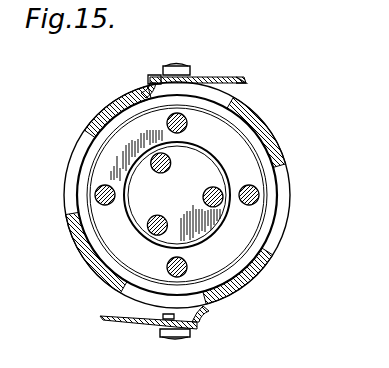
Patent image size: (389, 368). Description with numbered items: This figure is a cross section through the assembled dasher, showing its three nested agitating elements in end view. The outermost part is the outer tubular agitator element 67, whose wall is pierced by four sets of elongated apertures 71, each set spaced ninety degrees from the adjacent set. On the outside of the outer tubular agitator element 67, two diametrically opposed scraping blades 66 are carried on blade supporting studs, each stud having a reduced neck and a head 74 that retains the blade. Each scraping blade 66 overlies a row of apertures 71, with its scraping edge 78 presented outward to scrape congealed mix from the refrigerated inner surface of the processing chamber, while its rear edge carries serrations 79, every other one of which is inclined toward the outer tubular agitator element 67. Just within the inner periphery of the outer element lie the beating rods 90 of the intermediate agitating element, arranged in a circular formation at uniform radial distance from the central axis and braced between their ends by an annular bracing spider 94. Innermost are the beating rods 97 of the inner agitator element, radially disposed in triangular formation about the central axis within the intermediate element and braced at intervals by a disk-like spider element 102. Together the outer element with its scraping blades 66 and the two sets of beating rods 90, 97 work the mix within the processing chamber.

The scraping blade 66 is at (218, 77).
The outer tubular agitator element 67 is at (83, 264).
The elongated apertures 71 is at (76, 164).
The head 74 is at (181, 335).
The scraping edge 78 is at (243, 83).
The serrations 79 is at (157, 88).
The beating rods 90 is at (95, 197).
The annular bracing spider 94 is at (243, 155).
The beating rods 97 is at (203, 196).
The disk-like spider element 102 is at (193, 163).